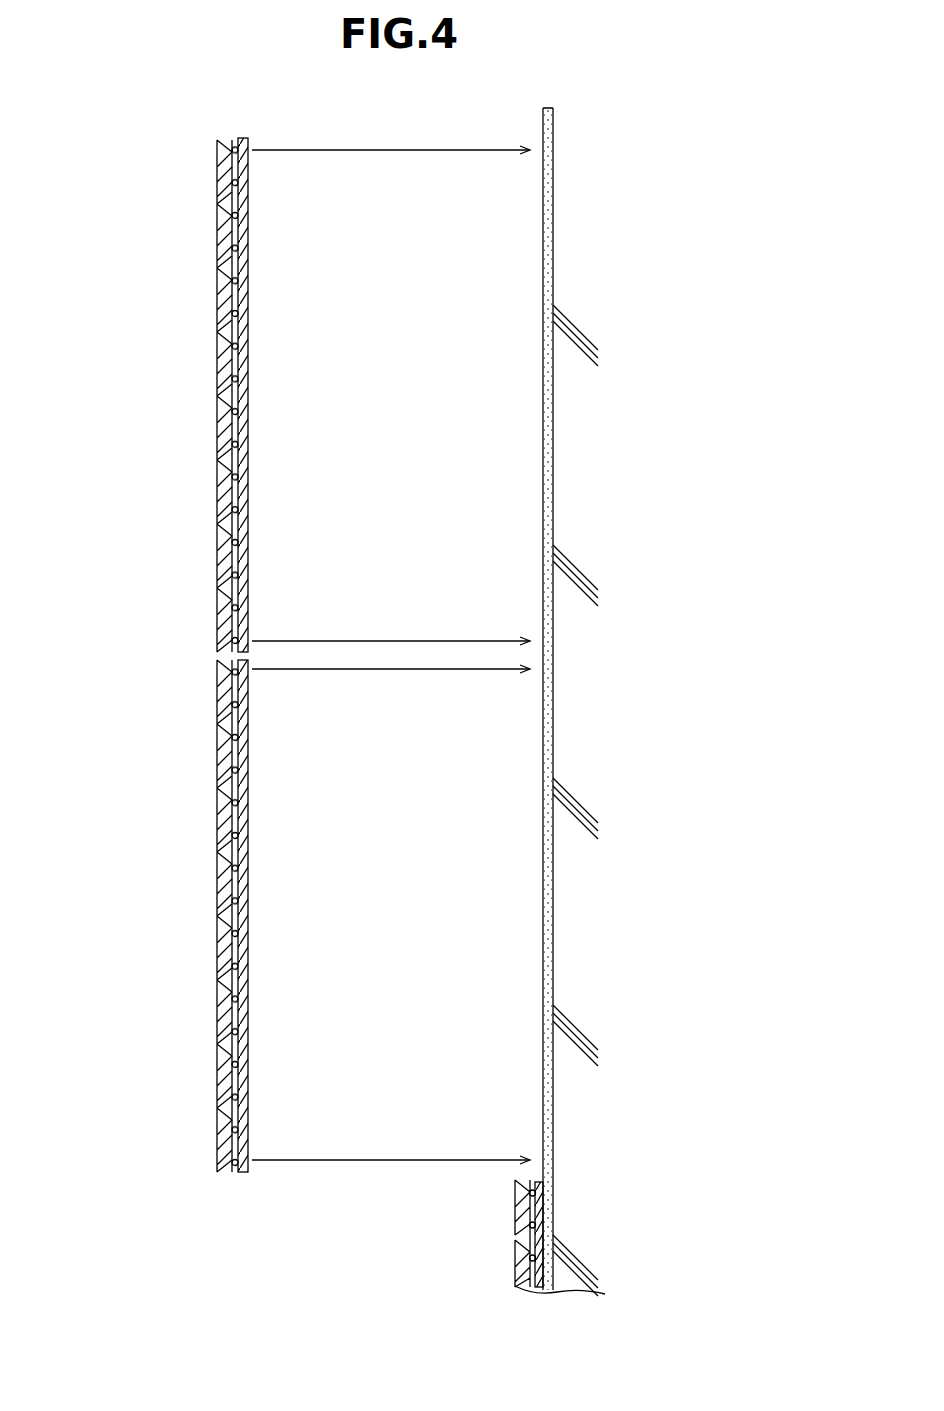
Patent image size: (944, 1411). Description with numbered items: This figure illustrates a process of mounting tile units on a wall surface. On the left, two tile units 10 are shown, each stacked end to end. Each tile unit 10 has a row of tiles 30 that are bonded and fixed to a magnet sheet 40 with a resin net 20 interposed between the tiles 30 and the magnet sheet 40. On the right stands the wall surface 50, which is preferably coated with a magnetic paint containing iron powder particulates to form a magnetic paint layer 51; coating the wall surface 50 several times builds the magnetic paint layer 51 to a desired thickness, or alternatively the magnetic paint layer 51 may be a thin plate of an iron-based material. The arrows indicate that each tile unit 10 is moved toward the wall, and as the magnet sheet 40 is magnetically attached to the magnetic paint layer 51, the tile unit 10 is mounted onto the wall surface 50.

The tile unit 10 is at (188, 383).
The resin net 20 is at (238, 136).
The tiles 30 is at (215, 298).
The magnet sheet 40 is at (243, 379).
The wall surface 50 is at (578, 142).
The magnetic paint layer 51 is at (542, 132).